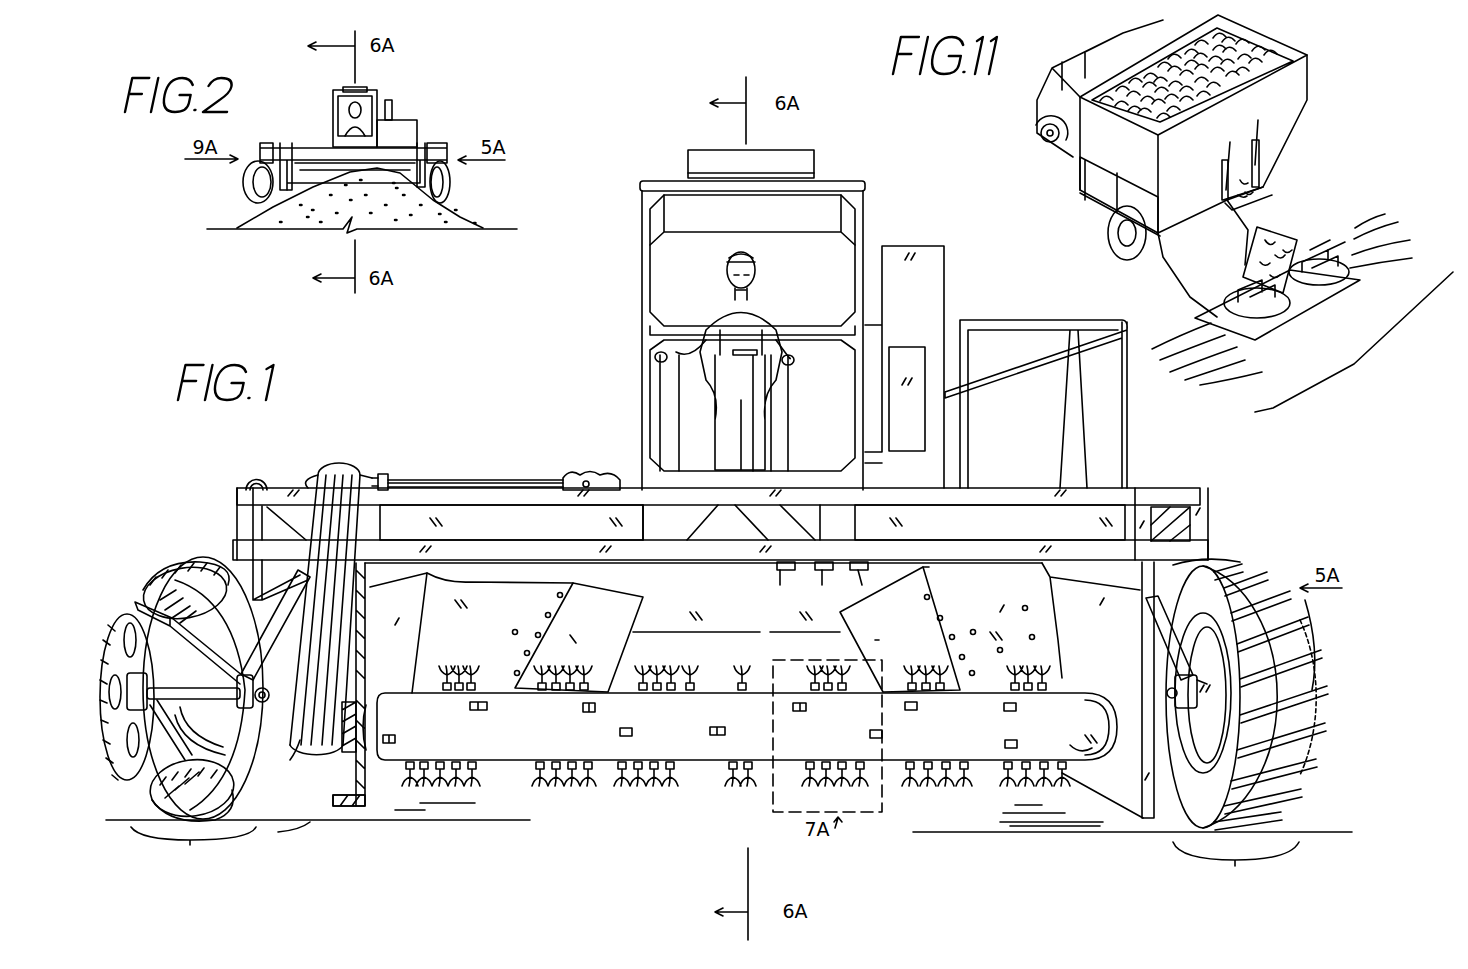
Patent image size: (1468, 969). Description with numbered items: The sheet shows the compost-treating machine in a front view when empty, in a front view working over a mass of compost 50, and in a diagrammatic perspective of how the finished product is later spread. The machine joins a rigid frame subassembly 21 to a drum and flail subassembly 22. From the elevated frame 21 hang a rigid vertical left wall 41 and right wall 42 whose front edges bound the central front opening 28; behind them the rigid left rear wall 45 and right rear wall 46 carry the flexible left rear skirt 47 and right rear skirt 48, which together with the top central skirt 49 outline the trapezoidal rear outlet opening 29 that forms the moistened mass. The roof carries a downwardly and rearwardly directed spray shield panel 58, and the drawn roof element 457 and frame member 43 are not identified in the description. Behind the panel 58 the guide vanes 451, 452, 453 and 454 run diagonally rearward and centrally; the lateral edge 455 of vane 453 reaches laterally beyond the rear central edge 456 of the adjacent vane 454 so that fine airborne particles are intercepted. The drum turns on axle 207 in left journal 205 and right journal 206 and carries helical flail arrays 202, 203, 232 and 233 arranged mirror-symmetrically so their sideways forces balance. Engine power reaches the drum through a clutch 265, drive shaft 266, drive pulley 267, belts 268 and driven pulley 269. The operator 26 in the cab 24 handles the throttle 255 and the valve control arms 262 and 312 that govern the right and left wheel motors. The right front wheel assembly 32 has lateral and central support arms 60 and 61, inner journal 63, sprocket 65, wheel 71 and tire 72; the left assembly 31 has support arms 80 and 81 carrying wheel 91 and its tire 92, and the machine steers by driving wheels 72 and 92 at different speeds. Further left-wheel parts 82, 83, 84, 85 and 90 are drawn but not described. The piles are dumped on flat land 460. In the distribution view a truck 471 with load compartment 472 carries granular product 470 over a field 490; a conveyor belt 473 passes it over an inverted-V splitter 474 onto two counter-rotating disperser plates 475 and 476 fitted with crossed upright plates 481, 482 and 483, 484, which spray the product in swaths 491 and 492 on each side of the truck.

In FIG. 1, the rigid frame subassembly 21 is at (1216, 490).
In FIG. 1, the drum and flail subassembly 22 is at (618, 793).
In FIG. 2, the cab 24 is at (377, 97).
In FIG. 1, the cab 24 is at (640, 266).
In FIG. 1, the operator 26 is at (725, 258).
In FIG. 2, the central front opening 28 is at (310, 172).
In FIG. 1, the rear outlet opening 29 is at (736, 644).
In FIG. 2, the left front wheel assembly 31 is at (247, 177).
In FIG. 1, the left front wheel assembly 31 is at (197, 712).
In FIG. 2, the right front wheel assembly 32 is at (450, 183).
In FIG. 1, the right front wheel assembly 32 is at (1232, 727).
In FIG. 1, the left wall 41 is at (380, 684).
In FIG. 1, the right wall 42 is at (1095, 690).
In FIG. 1, the frame post 43 is at (1137, 492).
In FIG. 1, the left rear wall 45 is at (484, 599).
In FIG. 1, the right rear wall 46 is at (989, 618).
In FIG. 1, the left rear skirt 47 is at (578, 637).
In FIG. 1, the right rear skirt 48 is at (894, 642).
In FIG. 1, the top central skirt 49 is at (751, 611).
In FIG. 2, the mass of compost 50 is at (467, 223).
In FIG. 1, the spray shield panel 58 is at (530, 568).
In FIG. 1, the lateral right front wheel support arm 60 is at (1205, 568).
In FIG. 1, the right front central wheel support arm 61 is at (1158, 620).
In FIG. 1, the interior right front wheel axle journal 63 is at (1207, 695).
In FIG. 1, the right front sprocket wheel 65 is at (1325, 652).
In FIG. 1, the right front wheel 71 is at (1203, 693).
In FIG. 1, the right front wheel tire 72 is at (1315, 750).
In FIG. 1, the left front wheel support arm 80 is at (124, 638).
In FIG. 1, the left front wheel support arm 81 is at (283, 640).
In FIG. 1, the lower roller 82 is at (160, 790).
In FIG. 1, the axle 83 is at (262, 705).
In FIG. 1, the hub opening 84 is at (108, 713).
In FIG. 1, the wheel hub plate 85 is at (106, 666).
In FIG. 1, the roller link 90 is at (135, 612).
In FIG. 1, the left front wheel 91 is at (225, 750).
In FIG. 1, the left front wheel 92 is at (162, 565).
In FIG. 1, the helical array of flails 202 is at (803, 712).
In FIG. 1, the helical array of flails 203 is at (910, 712).
In FIG. 1, the left journal 205 is at (345, 800).
In FIG. 1, the right journal 206 is at (1113, 718).
In FIG. 1, the drum axle 207 is at (348, 758).
In FIG. 1, the helical array of flails 232 is at (710, 733).
In FIG. 1, the helical array of flails 233 is at (602, 732).
In FIG. 1, the throttle 255 is at (662, 352).
In FIG. 1, the valve control arm 262 is at (792, 357).
In FIG. 1, the clutch 265 is at (775, 352).
In FIG. 1, the drive shaft 266 is at (472, 478).
In FIG. 1, the drive pulley 267 is at (380, 474).
In FIG. 1, the drive belts 268 is at (345, 470).
In FIG. 1, the driven pulley 269 is at (300, 755).
In FIG. 1, the valve control arm 312 is at (679, 352).
In FIG. 1, the guide vane 451 is at (777, 587).
In FIG. 1, the guide vane 452 is at (823, 587).
In FIG. 1, the guide vane 453 is at (905, 562).
In FIG. 1, the guide vane 454 is at (940, 562).
In FIG. 1, the lateral edge of vane 455 is at (940, 567).
In FIG. 1, the rear central edge of vane 456 is at (937, 629).
In FIG. 1, the cab roof unit 457 is at (812, 166).
In FIG. 1, the site of flat land 460 is at (285, 837).
In FIG. 11, the flat rigid plate 481 is at (1197, 303).
In FIG. 1, the flat rigid plate 481 is at (1060, 452).
In FIG. 11, the load of product 470 is at (1265, 60).
In FIG. 11, the truck 471 is at (1037, 103).
In FIG. 11, the load compartment 472 is at (1188, 81).
In FIG. 11, the conveyor belt 473 is at (1258, 200).
In FIG. 11, the splitter 474 is at (1280, 235).
In FIG. 11, the disperser plate 475 is at (1262, 312).
In FIG. 11, the disperser plate 476 is at (1315, 292).
In FIG. 11, the flat rigid plate 482 is at (1213, 351).
In FIG. 11, the flat rigid plate 483 is at (1318, 250).
In FIG. 11, the flat rigid plate 484 is at (1330, 252).
In FIG. 11, the field 490 is at (1324, 341).
In FIG. 11, the swath 491 is at (1265, 372).
In FIG. 11, the swath 492 is at (1380, 240).